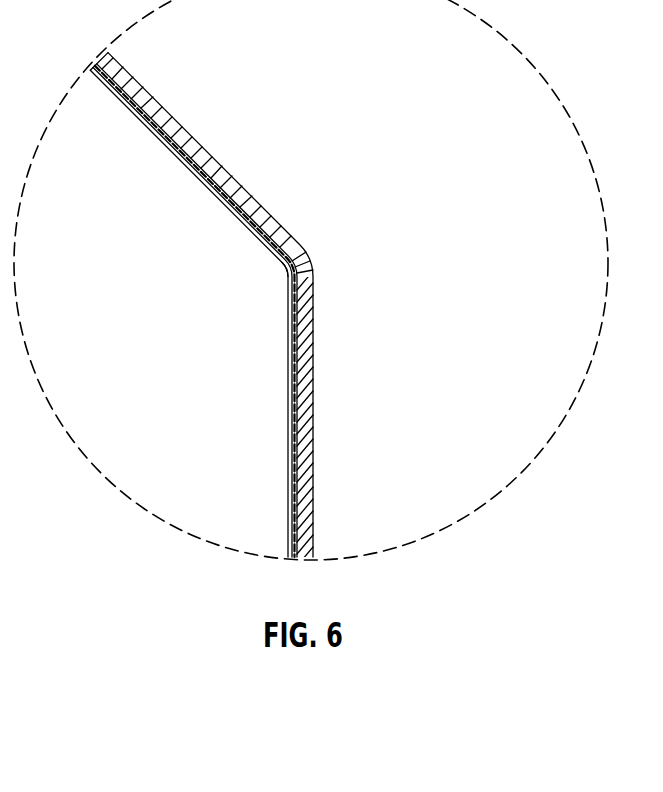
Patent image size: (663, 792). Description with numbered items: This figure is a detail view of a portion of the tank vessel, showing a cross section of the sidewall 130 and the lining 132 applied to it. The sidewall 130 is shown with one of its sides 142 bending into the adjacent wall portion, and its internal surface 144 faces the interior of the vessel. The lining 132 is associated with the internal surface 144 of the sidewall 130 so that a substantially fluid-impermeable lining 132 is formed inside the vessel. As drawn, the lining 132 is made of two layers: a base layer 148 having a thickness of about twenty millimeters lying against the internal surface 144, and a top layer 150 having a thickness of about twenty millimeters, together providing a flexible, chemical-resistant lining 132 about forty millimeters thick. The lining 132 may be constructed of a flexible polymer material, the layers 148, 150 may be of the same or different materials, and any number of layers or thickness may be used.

The sidewall 130 is at (218, 163).
The lining 132 is at (286, 270).
The sides 142 is at (143, 90).
The internal surface 144 is at (220, 205).
The base layer 148 is at (300, 378).
The top layer 150 is at (288, 395).